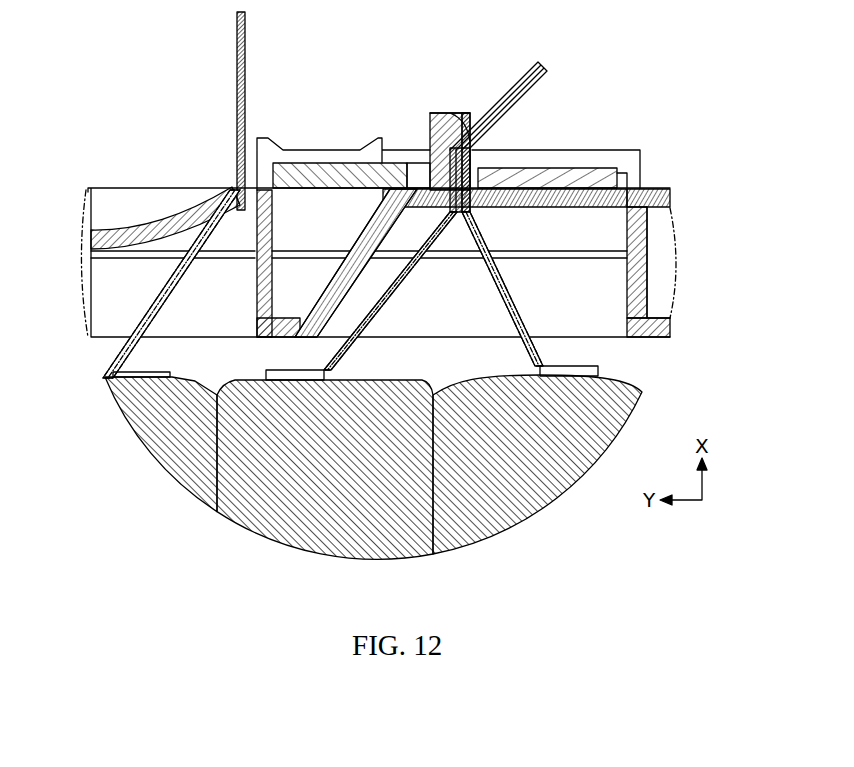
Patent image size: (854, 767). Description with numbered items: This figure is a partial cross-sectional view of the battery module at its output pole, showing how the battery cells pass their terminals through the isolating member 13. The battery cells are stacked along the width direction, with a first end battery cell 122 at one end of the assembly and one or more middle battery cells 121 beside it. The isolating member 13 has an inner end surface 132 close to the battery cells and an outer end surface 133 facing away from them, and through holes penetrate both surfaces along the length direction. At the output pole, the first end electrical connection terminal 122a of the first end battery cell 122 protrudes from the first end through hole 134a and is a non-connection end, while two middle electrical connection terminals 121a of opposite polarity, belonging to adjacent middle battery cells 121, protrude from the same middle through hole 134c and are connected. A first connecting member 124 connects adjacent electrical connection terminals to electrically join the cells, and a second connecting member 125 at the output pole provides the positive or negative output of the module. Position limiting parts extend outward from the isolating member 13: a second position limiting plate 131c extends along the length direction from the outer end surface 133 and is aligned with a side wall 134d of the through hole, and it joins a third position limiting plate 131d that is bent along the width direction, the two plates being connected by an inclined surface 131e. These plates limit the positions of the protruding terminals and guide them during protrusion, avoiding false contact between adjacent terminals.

The isolating member 13 is at (648, 258).
The middle battery cell 121 is at (493, 533).
The middle electrical connection terminal 121a is at (563, 93).
The first end battery cell 122 is at (150, 443).
The first end electrical connection terminal 122a is at (237, 75).
The first connecting member 124 is at (575, 165).
The second connecting member 125 is at (346, 162).
The second position limiting plate 131c is at (417, 163).
The third position limiting plate 131d is at (452, 113).
The inclined surface 131e is at (433, 117).
The inner end surface 132 is at (652, 340).
The outer end surface 133 is at (641, 186).
The first end through hole 134a is at (234, 186).
The middle through hole 134c is at (469, 214).
The side wall of the through hole 134d is at (390, 195).